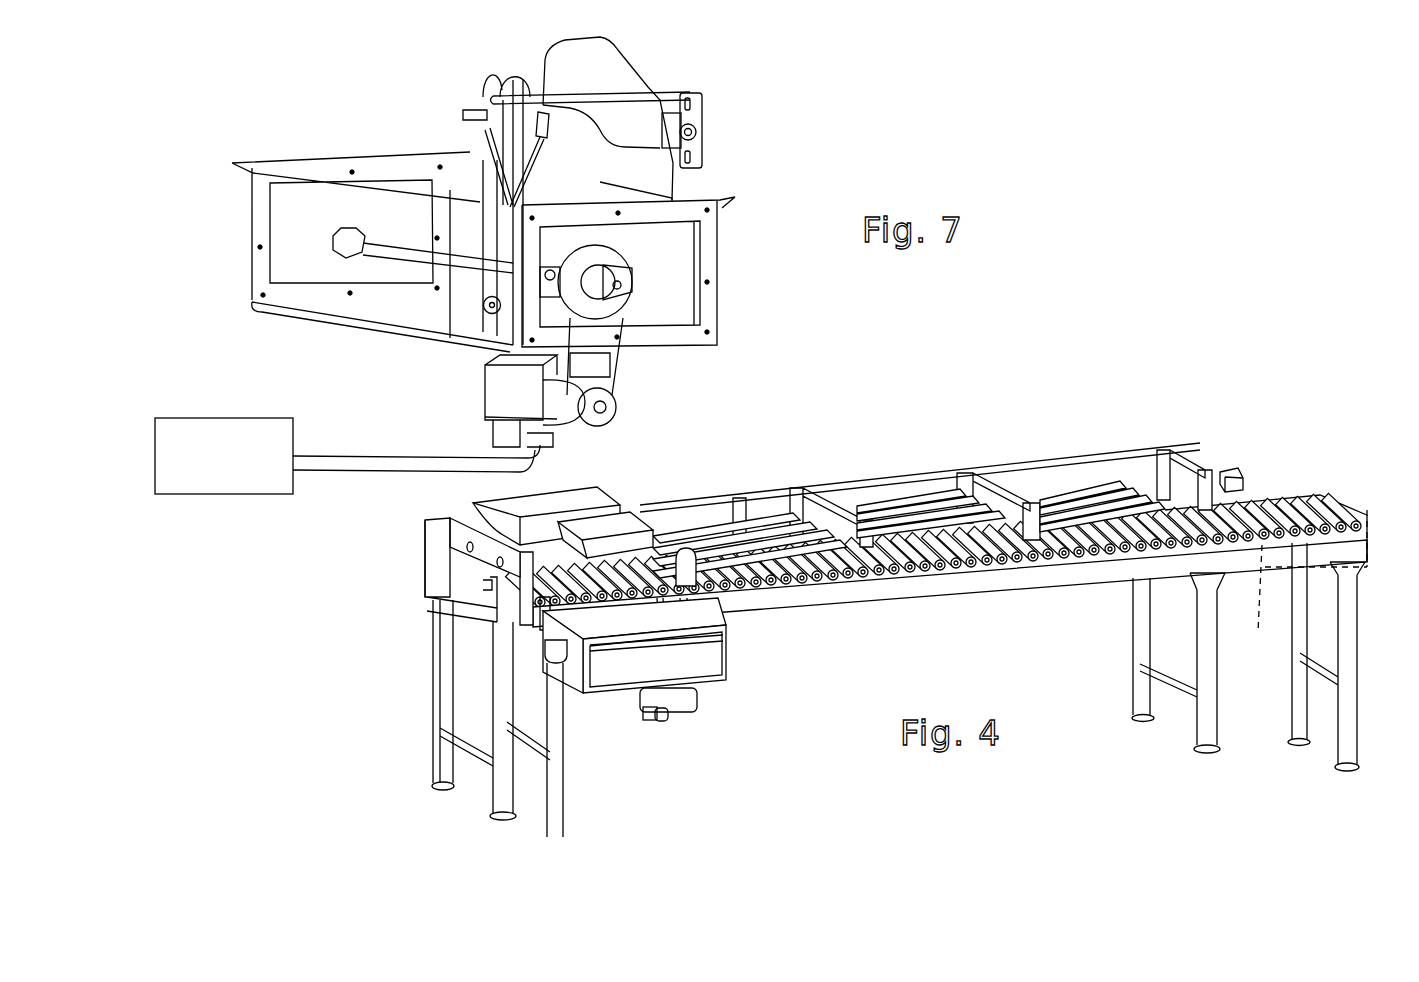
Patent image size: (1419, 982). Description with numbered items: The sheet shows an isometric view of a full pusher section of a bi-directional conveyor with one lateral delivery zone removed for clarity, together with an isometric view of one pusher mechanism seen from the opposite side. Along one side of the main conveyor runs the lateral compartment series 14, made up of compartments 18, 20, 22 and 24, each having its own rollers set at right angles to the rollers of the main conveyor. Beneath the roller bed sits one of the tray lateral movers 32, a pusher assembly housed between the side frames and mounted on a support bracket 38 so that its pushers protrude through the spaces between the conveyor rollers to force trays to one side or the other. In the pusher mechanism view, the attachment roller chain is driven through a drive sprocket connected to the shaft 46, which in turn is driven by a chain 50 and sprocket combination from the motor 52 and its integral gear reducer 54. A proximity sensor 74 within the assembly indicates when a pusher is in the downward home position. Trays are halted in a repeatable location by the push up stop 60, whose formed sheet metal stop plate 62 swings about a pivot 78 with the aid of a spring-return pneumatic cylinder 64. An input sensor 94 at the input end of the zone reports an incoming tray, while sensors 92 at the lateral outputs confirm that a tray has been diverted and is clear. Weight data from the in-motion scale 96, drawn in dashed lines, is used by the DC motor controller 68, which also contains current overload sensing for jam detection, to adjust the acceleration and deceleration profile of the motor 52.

In FIG. 4, the lateral compartment series 14 is at (896, 586).
In FIG. 4, the compartment 18 is at (480, 507).
In FIG. 4, the compartment 20 is at (731, 497).
In FIG. 4, the compartment 22 is at (900, 497).
In FIG. 4, the compartment 24 is at (1023, 490).
In FIG. 4, the tray lateral mover 32 is at (610, 718).
In FIG. 7, the support bracket 38 is at (250, 300).
In FIG. 7, the shaft 46 is at (387, 250).
In FIG. 7, the chain 50 is at (602, 363).
In FIG. 7, the motor 52 is at (497, 393).
In FIG. 7, the integral gear reducer 54 is at (557, 405).
In FIG. 7, the push up stop 60 is at (717, 85).
In FIG. 7, the stop plate 62 is at (610, 67).
In FIG. 7, the pneumatic cylinder 64 is at (485, 308).
In FIG. 7, the DC motor controller 68 is at (207, 418).
In FIG. 7, the proximity sensor 74 is at (613, 370).
In FIG. 7, the pivot 78 is at (700, 131).
In FIG. 4, the sensors 92 is at (665, 543).
In FIG. 4, the input sensor 94 is at (1240, 458).
In FIG. 4, the in-motion scale 96 is at (1302, 592).